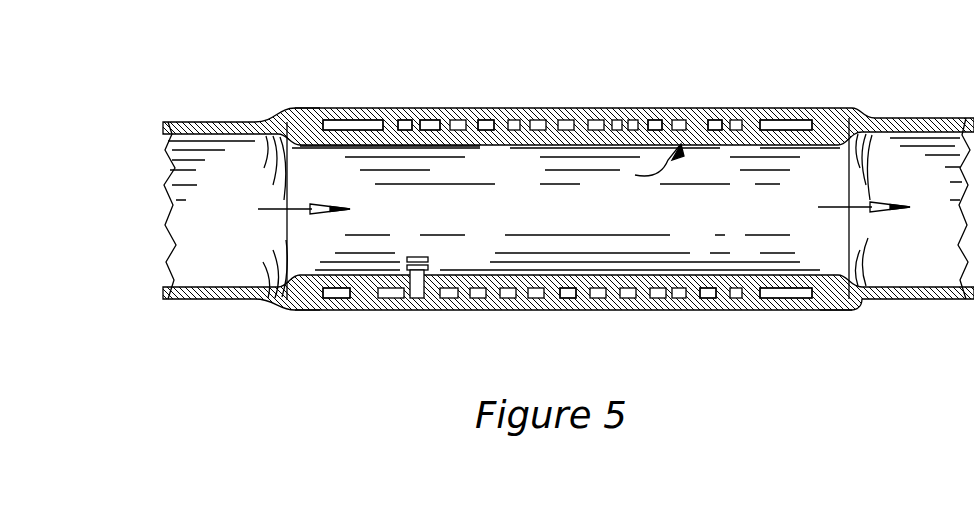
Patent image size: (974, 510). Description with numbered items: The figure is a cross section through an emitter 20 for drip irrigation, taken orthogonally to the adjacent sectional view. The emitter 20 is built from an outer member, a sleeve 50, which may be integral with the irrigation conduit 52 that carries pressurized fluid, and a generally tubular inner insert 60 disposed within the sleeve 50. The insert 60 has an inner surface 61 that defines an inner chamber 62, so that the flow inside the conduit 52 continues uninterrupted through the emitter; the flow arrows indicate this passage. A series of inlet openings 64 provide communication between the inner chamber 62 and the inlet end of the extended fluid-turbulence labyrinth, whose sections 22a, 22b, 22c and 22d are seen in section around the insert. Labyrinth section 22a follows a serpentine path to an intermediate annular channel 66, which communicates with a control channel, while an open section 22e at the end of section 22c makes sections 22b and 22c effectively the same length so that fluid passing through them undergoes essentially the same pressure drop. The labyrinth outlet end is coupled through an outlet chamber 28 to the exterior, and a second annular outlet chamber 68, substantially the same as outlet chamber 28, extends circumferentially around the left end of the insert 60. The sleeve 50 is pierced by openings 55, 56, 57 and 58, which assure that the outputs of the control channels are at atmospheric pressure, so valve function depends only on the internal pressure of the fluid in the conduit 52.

The emitter 20 is at (305, 45).
The labyrinth section 22a is at (568, 298).
The labyrinth section 22b is at (655, 120).
The labyrinth section 22c is at (492, 120).
The labyrinth section 22d is at (403, 120).
The open section 22e is at (422, 120).
The outlet line or chamber 28 is at (789, 120).
The sleeve 50 is at (587, 107).
The irrigation conduit 52 is at (201, 121).
The opening 55 is at (793, 103).
The opening 56 is at (793, 305).
The opening 57 is at (352, 108).
The opening 58 is at (348, 302).
The inner insert 60 is at (639, 171).
The inner surface 61 is at (498, 148).
The inner chamber 62 is at (565, 226).
The inlet openings 64 is at (428, 265).
The intermediate annular channel 66 is at (715, 120).
The second annular outlet chamber 68 is at (352, 120).